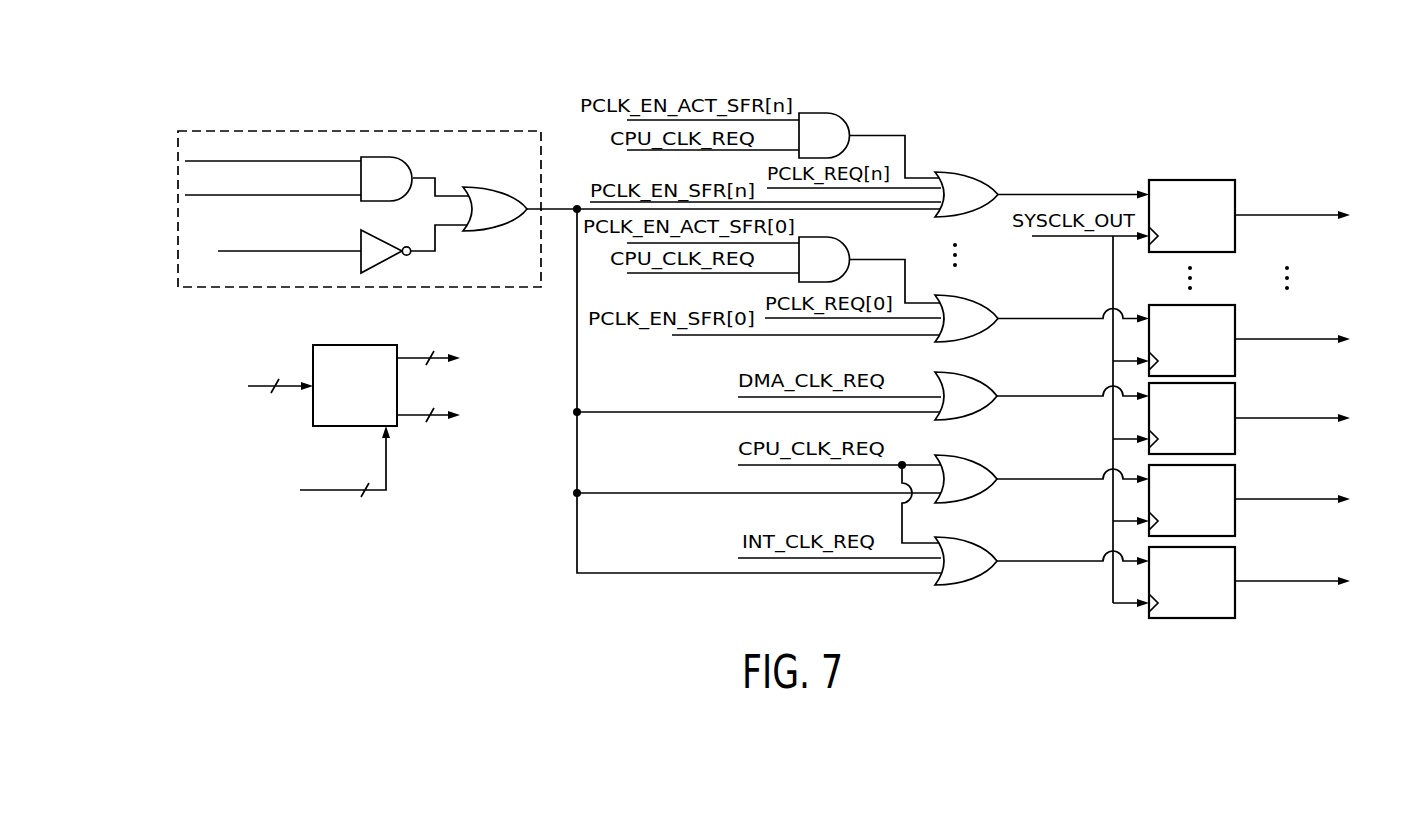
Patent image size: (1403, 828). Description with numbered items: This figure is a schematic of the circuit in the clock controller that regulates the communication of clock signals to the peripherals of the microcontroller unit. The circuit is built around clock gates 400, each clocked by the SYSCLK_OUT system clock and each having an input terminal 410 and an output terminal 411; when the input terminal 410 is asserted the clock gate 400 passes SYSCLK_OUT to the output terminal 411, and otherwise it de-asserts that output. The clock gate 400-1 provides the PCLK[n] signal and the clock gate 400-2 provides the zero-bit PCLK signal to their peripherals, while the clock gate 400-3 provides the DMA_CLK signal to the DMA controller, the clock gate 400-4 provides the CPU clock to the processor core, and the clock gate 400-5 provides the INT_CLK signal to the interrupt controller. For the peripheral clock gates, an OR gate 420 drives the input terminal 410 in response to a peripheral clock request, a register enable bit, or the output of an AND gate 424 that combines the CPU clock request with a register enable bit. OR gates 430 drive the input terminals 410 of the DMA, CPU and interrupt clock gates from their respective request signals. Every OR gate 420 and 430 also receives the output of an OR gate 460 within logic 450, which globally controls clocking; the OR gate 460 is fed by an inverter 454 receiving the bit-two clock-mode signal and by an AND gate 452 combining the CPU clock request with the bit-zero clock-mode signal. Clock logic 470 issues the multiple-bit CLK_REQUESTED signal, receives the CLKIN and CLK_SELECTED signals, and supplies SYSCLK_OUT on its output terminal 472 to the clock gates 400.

The clock gate 400 is at (1236, 401).
The clock gate 400-1 is at (1237, 236).
The clock gate 400-2 is at (1237, 360).
The clock gate 400-3 is at (1237, 438).
The clock gate 400-4 is at (1237, 519).
The clock gate 400-5 is at (1237, 601).
The input terminal 410 is at (1048, 194).
The output terminal 411 is at (1330, 213).
The OR gate 420 is at (965, 172).
The AND gate 424 is at (830, 113).
The OR gate 430 is at (963, 373).
The logic 450 is at (377, 196).
The AND gate 452 is at (394, 157).
The inverter 454 is at (380, 237).
The OR gate 460 is at (490, 233).
The clock logic 470 is at (322, 345).
The system clock output 472 is at (414, 418).